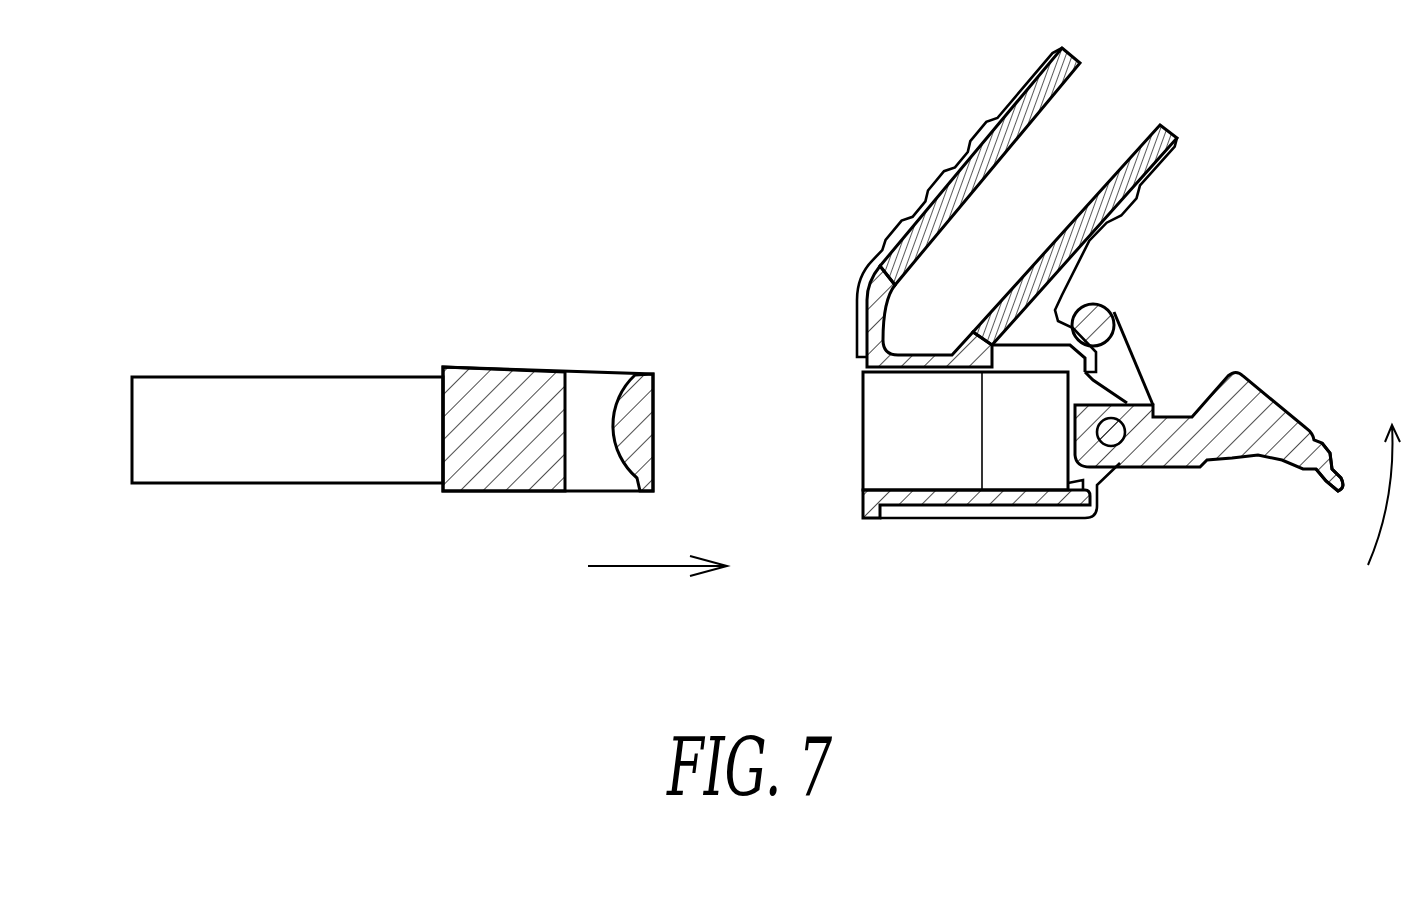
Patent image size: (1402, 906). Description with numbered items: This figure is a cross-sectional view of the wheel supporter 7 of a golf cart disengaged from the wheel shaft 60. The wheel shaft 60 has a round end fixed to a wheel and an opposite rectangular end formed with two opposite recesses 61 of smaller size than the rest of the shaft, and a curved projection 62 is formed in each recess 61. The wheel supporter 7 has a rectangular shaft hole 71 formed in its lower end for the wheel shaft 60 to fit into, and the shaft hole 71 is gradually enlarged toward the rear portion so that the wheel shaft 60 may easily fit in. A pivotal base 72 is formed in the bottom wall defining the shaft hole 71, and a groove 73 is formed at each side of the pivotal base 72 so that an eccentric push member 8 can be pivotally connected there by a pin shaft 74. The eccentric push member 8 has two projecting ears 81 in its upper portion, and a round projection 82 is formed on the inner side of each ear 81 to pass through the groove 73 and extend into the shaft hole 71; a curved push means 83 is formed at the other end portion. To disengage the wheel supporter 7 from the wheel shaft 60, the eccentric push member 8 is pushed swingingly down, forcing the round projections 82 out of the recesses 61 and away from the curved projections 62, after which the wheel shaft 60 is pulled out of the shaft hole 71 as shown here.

The wheel supporter 7 is at (947, 177).
The eccentric push member 8 is at (1231, 458).
The wheel shaft 60 is at (348, 392).
The recess 61 is at (583, 388).
The curved projection 62 is at (621, 410).
The shaft hole 71 is at (927, 462).
The pivotal base 72 is at (1087, 398).
The groove 73 is at (1025, 370).
The pin shaft 74 is at (1112, 433).
The projecting ear 81 is at (1117, 360).
The round projection 82 is at (1098, 322).
The curved push means 83 is at (1307, 465).